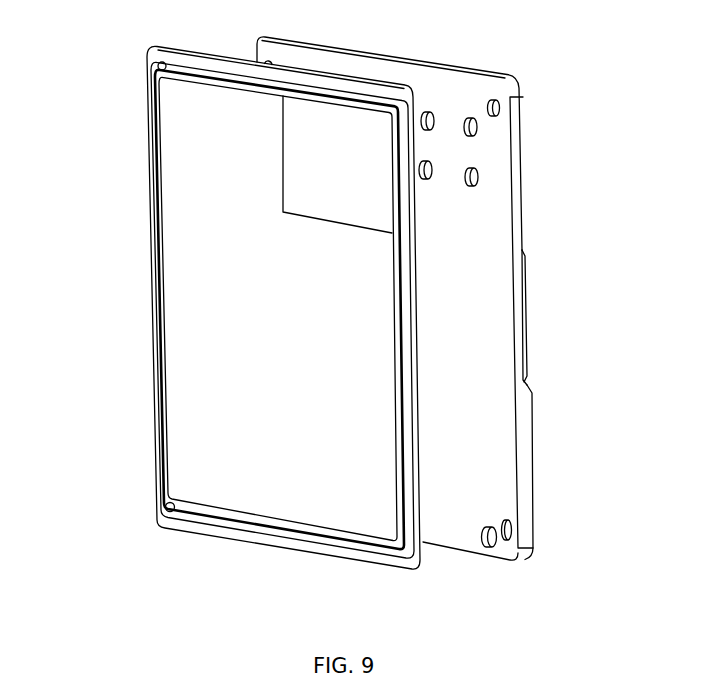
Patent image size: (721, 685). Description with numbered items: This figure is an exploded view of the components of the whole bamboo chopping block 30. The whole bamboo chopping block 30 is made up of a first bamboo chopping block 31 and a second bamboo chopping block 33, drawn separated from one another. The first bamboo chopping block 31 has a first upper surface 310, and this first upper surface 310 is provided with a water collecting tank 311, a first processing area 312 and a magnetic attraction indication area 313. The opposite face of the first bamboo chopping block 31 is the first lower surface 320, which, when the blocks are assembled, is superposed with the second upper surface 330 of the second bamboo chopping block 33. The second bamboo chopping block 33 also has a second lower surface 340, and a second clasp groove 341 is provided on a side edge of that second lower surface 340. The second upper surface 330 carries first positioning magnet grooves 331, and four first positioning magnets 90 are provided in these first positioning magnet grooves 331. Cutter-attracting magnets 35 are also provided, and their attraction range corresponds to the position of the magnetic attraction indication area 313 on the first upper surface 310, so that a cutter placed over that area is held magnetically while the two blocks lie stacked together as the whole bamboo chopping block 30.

The whole bamboo chopping block 30 is at (615, 70).
The first bamboo chopping block 31 is at (337, 334).
The first upper surface 310 is at (147, 58).
The water collecting tank 311 is at (168, 500).
The first processing area 312 is at (223, 340).
The magnetic attraction indication area 313 is at (312, 180).
The first lower surface 320 is at (422, 450).
The second bamboo chopping block 33 is at (453, 329).
The second upper surface 330 is at (465, 263).
The first positioning magnet grooves 331 is at (495, 108).
The cutter-attracting magnets 35 is at (478, 177).
The second lower surface 340 is at (533, 425).
The second clasp groove 341 is at (522, 333).
The first positioning magnets 90 is at (494, 543).